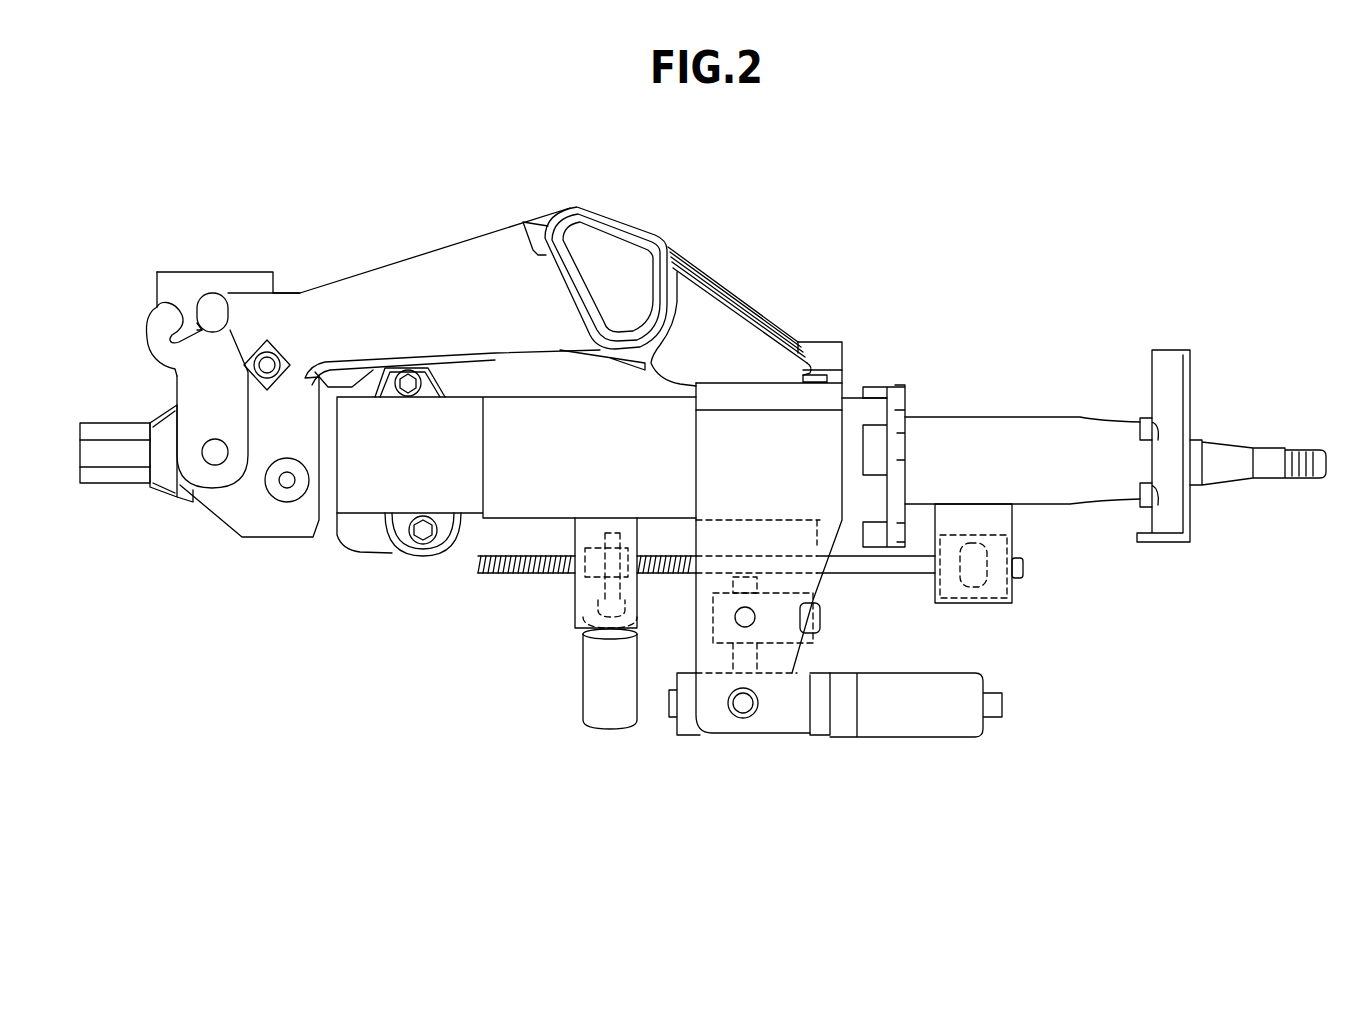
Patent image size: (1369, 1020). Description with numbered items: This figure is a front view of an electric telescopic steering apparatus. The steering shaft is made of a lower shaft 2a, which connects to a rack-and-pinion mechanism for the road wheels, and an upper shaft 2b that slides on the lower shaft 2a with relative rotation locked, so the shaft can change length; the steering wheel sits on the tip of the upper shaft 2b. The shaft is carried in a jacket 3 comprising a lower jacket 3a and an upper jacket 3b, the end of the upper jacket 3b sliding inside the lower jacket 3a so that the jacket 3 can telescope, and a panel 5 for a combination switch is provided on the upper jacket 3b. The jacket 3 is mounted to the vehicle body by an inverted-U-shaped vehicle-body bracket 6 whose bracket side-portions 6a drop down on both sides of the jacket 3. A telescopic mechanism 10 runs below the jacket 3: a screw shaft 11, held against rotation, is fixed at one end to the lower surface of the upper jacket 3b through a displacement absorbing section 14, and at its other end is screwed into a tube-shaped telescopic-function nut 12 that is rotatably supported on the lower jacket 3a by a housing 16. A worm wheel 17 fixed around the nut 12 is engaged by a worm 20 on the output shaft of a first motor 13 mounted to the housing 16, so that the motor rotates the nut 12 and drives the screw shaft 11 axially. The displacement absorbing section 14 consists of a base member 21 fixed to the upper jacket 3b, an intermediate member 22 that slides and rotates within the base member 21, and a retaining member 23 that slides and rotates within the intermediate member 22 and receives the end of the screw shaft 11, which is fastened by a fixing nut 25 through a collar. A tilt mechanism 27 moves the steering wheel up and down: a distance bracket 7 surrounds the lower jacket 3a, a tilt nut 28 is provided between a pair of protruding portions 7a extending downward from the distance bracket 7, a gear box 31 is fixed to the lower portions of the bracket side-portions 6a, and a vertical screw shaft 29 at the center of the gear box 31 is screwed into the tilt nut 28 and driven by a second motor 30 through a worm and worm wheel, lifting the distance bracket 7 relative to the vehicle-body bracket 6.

The lower shaft 2a is at (113, 428).
The upper shaft 2b is at (1227, 452).
The jacket 3 is at (773, 162).
The lower jacket 3a is at (460, 477).
The upper jacket 3b is at (927, 420).
The panel 5 is at (1193, 367).
The vehicle-body bracket 6 is at (825, 347).
The bracket side-portions 6a is at (696, 657).
The distance bracket 7 is at (492, 403).
The protruding portions 7a is at (813, 547).
The telescopic mechanism 10 is at (473, 655).
The screw shaft 11 is at (488, 572).
The telescopic-function nut 12 is at (590, 578).
The first motor 13 is at (602, 717).
The displacement absorbing section 14 is at (983, 620).
The housing 16 is at (627, 533).
The worm wheel 17 is at (600, 540).
The worm 20 is at (597, 593).
The base member 21 is at (1012, 522).
The intermediate member 22 is at (1017, 588).
The retaining member 23 is at (980, 590).
The fixing nut 25 is at (1023, 573).
The tilt mechanism 27 is at (832, 755).
The tilt nut 28 is at (810, 617).
The screw shaft 29 is at (760, 657).
The second motor 30 is at (923, 735).
The gear box 31 is at (795, 730).